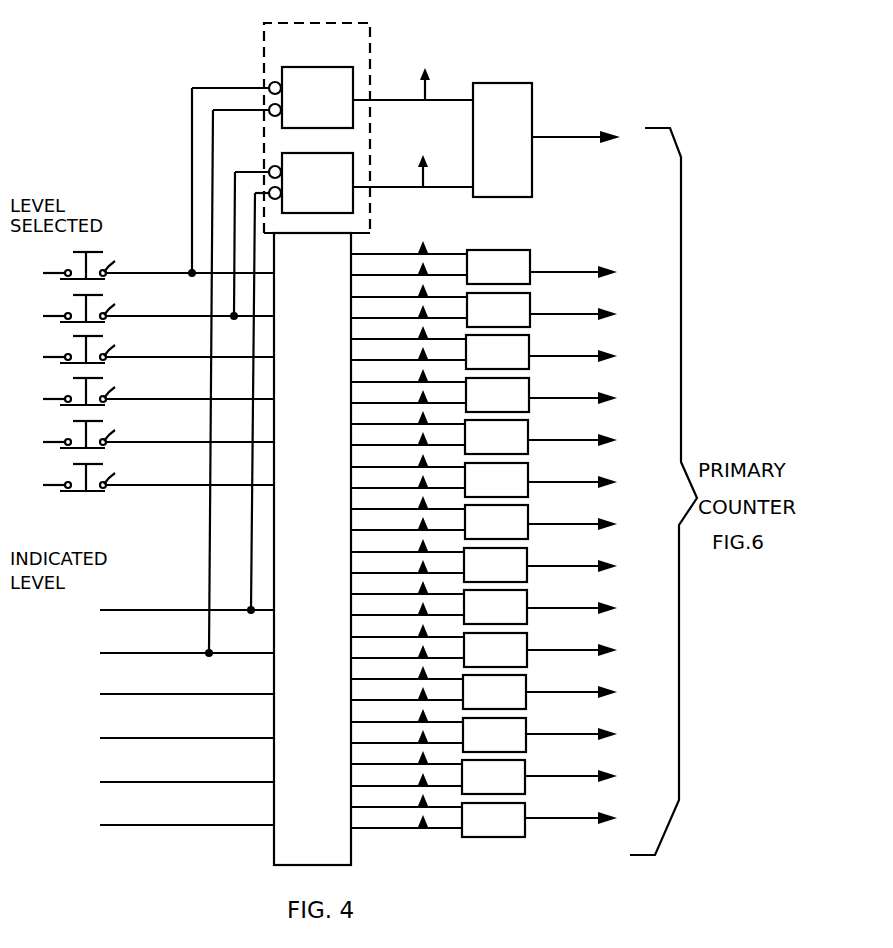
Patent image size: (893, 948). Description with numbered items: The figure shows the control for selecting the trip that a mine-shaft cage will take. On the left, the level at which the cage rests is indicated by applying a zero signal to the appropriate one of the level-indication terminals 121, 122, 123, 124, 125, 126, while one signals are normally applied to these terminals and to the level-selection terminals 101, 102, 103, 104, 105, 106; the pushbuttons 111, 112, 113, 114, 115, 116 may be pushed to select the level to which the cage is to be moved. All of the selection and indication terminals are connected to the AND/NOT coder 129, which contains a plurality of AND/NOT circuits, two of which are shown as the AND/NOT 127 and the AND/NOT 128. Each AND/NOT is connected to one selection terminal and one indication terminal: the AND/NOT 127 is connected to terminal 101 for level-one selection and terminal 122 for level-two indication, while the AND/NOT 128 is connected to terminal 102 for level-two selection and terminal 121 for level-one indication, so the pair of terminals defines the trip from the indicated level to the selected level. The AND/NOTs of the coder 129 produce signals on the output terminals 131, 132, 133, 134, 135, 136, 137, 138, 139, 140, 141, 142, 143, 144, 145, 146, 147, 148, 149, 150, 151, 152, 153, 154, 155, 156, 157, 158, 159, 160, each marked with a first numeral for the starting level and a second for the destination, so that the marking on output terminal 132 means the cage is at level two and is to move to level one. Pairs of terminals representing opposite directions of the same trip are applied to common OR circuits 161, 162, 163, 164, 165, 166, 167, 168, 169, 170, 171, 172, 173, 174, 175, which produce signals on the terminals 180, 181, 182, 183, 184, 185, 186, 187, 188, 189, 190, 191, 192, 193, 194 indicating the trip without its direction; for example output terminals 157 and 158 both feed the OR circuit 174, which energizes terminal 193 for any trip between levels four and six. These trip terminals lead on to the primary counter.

The terminal 101 is at (55, 271).
The terminal 102 is at (55, 314).
The terminal 103 is at (55, 355).
The terminal 104 is at (55, 397).
The terminal 105 is at (55, 440).
The terminal 106 is at (55, 483).
The pushbutton 111 is at (111, 265).
The pushbutton 112 is at (111, 308).
The pushbutton 113 is at (111, 348).
The pushbutton 114 is at (115, 387).
The pushbutton 115 is at (111, 434).
The pushbutton 116 is at (111, 473).
The terminal 121 is at (145, 609).
The terminal 122 is at (145, 652).
The terminal 123 is at (145, 693).
The terminal 124 is at (145, 737).
The terminal 125 is at (145, 781).
The terminal 126 is at (145, 824).
The AND/NOT 127 is at (340, 67).
The AND/NOT 128 is at (311, 153).
The AND/NOT coder 129 is at (356, 233).
The output terminal 131 is at (429, 88).
The output terminal 132 is at (428, 169).
The output terminal 133 is at (428, 250).
The output terminal 134 is at (429, 272).
The output terminal 135 is at (429, 294).
The output terminal 136 is at (429, 315).
The output terminal 137 is at (429, 336).
The output terminal 138 is at (429, 357).
The output terminal 139 is at (429, 379).
The output terminal 140 is at (429, 400).
The output terminal 141 is at (429, 421).
The output terminal 142 is at (429, 442).
The output terminal 143 is at (429, 464).
The output terminal 144 is at (429, 485).
The output terminal 145 is at (429, 506).
The output terminal 146 is at (429, 527).
The output terminal 147 is at (429, 549).
The output terminal 148 is at (429, 570).
The output terminal 149 is at (429, 591).
The output terminal 150 is at (429, 612).
The output terminal 151 is at (429, 634).
The output terminal 152 is at (429, 655).
The output terminal 153 is at (429, 676).
The output terminal 154 is at (429, 697).
The output terminal 155 is at (429, 719).
The output terminal 156 is at (429, 740).
The output terminal 157 is at (429, 761).
The output terminal 158 is at (429, 783).
The output terminal 159 is at (429, 804).
The output terminal 160 is at (429, 825).
The OR circuit 161 is at (532, 96).
The OR circuit 162 is at (531, 260).
The OR circuit 163 is at (531, 303).
The OR circuit 164 is at (529, 345).
The OR circuit 165 is at (525, 388).
The OR circuit 166 is at (525, 430).
The OR circuit 167 is at (525, 473).
The OR circuit 168 is at (525, 515).
The OR circuit 169 is at (525, 558).
The OR circuit 170 is at (525, 600).
The OR circuit 171 is at (525, 643).
The OR circuit 172 is at (525, 685).
The OR circuit 173 is at (521, 728).
The OR circuit 174 is at (521, 770).
The OR circuit 175 is at (521, 813).
The terminal 180 is at (603, 132).
The terminal 181 is at (616, 274).
The terminal 182 is at (616, 316).
The terminal 183 is at (616, 358).
The terminal 184 is at (616, 400).
The terminal 185 is at (609, 440).
The terminal 186 is at (609, 482).
The terminal 187 is at (609, 524).
The terminal 188 is at (609, 566).
The terminal 189 is at (609, 608).
The terminal 190 is at (609, 650).
The terminal 191 is at (605, 692).
The terminal 192 is at (609, 734).
The terminal 193 is at (607, 776).
The terminal 194 is at (614, 813).